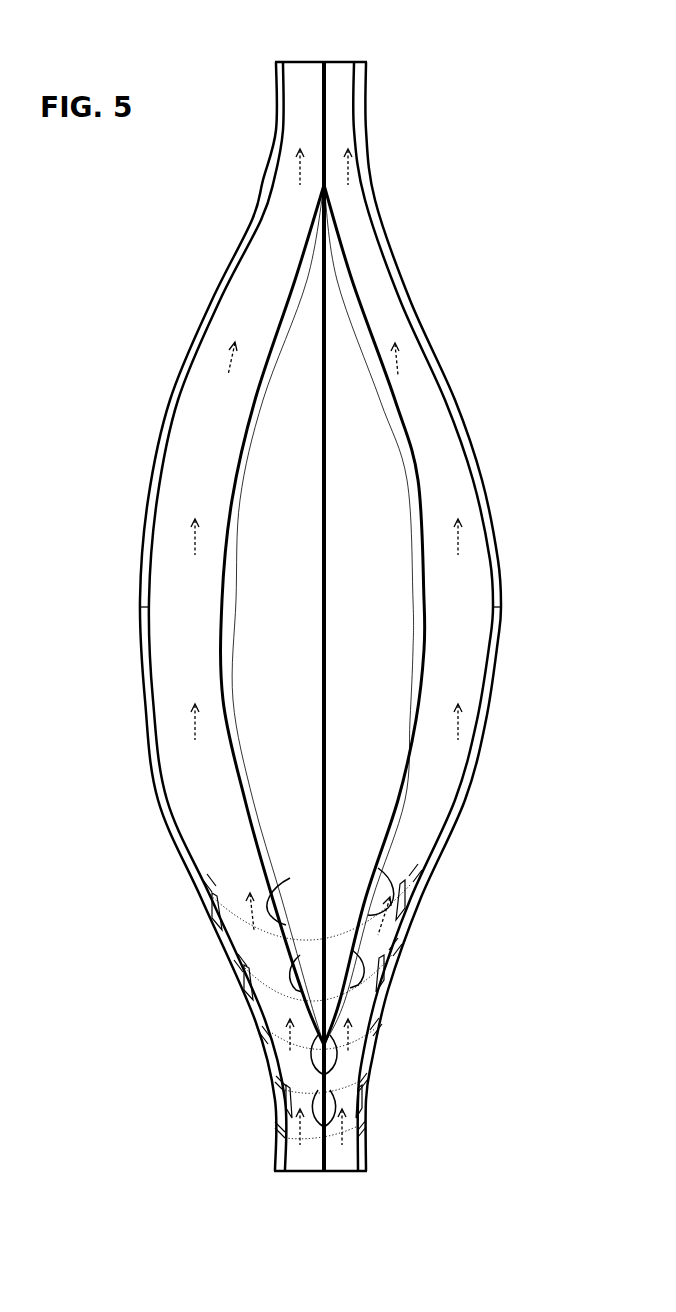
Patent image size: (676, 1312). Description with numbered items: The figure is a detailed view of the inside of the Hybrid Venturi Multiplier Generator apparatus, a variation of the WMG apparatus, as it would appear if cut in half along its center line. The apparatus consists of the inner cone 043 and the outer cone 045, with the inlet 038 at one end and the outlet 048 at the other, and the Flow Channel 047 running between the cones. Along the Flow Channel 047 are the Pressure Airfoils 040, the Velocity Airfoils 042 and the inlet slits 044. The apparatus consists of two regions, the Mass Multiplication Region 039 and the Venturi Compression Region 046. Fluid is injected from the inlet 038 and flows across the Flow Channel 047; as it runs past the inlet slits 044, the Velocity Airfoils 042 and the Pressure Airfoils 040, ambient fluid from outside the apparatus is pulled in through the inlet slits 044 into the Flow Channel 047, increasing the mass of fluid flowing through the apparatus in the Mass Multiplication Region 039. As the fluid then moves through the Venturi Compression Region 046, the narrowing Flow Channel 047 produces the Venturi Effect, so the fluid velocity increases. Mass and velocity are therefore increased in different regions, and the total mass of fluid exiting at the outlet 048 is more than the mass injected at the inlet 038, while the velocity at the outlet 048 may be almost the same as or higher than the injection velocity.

The inlet 038 is at (305, 1173).
The Mass Multiplication Region 039 is at (355, 995).
The Pressure Airfoils 040 is at (240, 992).
The Velocity Airfoils 042 is at (280, 910).
The inner cone 043 is at (384, 509).
The inlet slits 044 is at (203, 893).
The outer cone 045 is at (166, 425).
The Venturi Compression Region 046 is at (275, 237).
The Flow Channel 047 is at (204, 616).
The outlet 048 is at (341, 62).